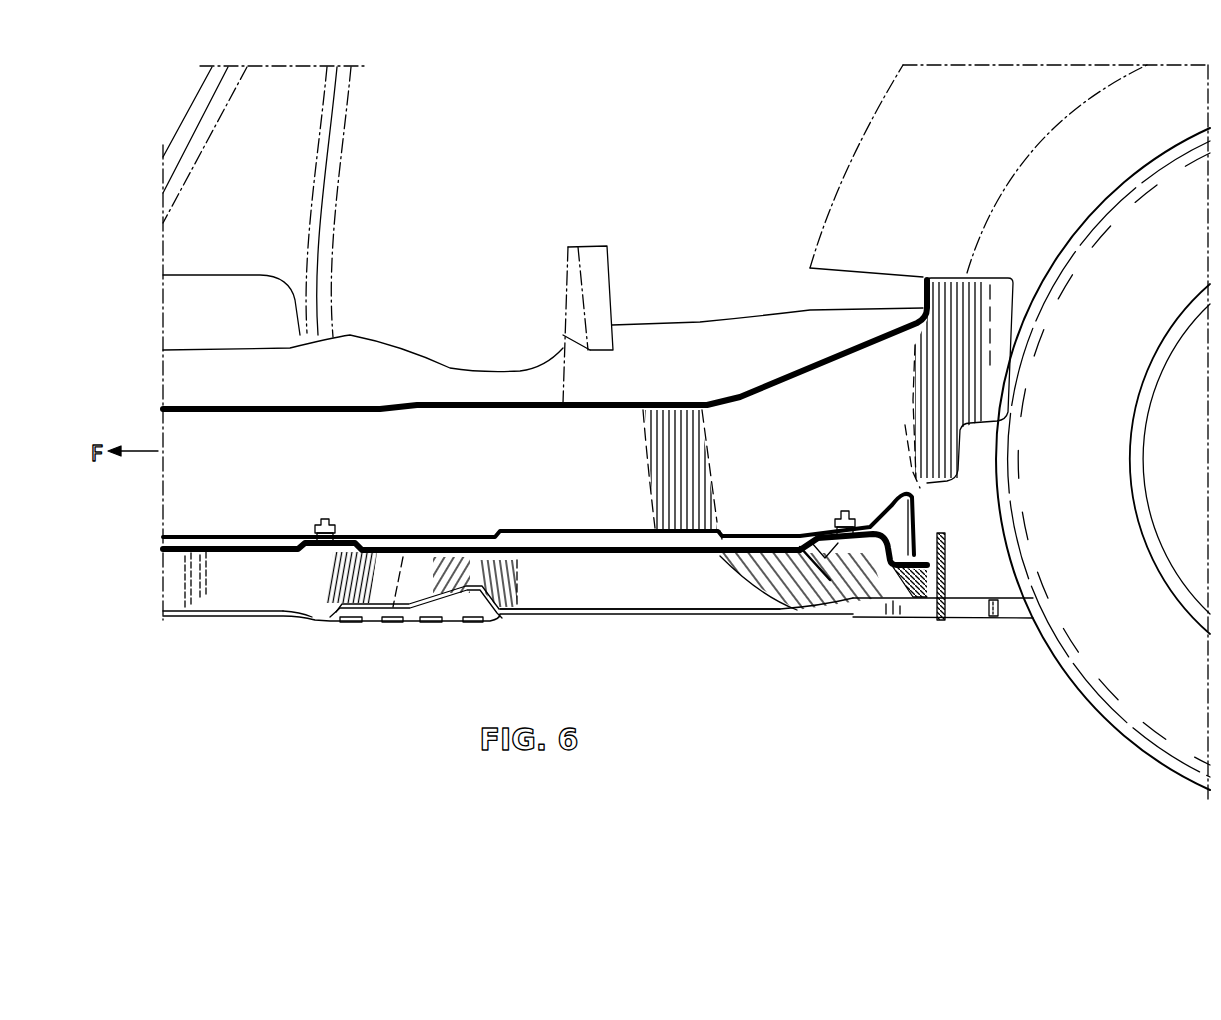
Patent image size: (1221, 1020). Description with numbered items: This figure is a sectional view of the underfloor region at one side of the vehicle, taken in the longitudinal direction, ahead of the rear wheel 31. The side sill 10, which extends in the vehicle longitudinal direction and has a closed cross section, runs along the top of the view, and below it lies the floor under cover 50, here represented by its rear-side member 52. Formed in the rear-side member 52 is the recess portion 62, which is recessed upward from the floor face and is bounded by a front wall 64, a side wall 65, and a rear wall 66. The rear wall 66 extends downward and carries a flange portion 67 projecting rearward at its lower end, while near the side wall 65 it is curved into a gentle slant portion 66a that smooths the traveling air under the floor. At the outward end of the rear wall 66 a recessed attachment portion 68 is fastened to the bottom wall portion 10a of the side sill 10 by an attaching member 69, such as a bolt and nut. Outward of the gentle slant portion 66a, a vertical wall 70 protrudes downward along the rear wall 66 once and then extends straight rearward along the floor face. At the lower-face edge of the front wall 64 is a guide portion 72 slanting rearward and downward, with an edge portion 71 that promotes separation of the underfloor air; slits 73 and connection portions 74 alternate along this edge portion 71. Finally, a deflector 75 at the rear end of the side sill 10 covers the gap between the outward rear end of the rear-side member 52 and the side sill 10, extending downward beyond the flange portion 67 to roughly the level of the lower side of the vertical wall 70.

The side sill 10 is at (643, 400).
The bottom wall portion 10a is at (750, 534).
The rear wheel 31 is at (1077, 693).
The floor under cover 50 is at (195, 620).
The rear-side member 52 is at (247, 622).
The recess portion 62 is at (591, 558).
The front wall 64 is at (446, 565).
The side wall 65 is at (657, 607).
The rear wall 66 is at (880, 553).
The gentle slant portion 66a is at (755, 597).
The flange portion 67 is at (924, 571).
The attachment portion 68 is at (823, 548).
The attaching member 69 is at (846, 510).
The vertical wall 70 is at (983, 611).
The edge portion 71 is at (409, 622).
The guide portion 72 is at (308, 620).
The slit 73 is at (477, 623).
The connection portion 74 is at (369, 620).
The deflector 75 is at (943, 575).